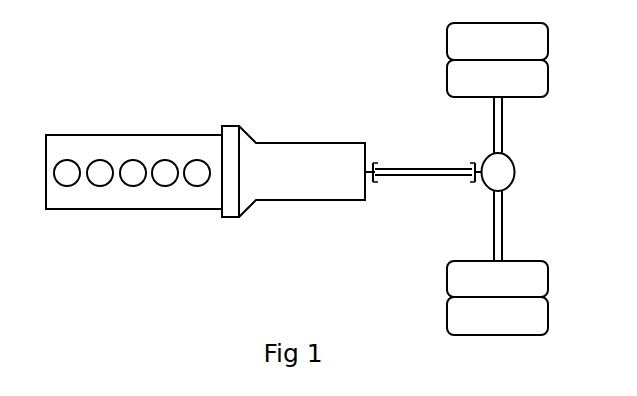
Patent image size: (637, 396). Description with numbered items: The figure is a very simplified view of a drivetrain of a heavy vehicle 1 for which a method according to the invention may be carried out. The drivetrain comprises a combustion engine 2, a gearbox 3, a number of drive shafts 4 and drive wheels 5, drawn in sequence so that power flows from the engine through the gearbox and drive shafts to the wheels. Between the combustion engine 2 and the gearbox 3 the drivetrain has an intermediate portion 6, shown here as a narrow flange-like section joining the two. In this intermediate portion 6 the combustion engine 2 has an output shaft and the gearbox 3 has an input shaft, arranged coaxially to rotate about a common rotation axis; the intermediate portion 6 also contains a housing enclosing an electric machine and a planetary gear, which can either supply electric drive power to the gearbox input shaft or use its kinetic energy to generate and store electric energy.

The heavy vehicle 1 is at (170, 94).
The combustion engine 2 is at (118, 197).
The gearbox 3 is at (320, 180).
The drive shafts 4 is at (420, 170).
The drive wheels 5 is at (529, 76).
The intermediate portion 6 is at (233, 162).